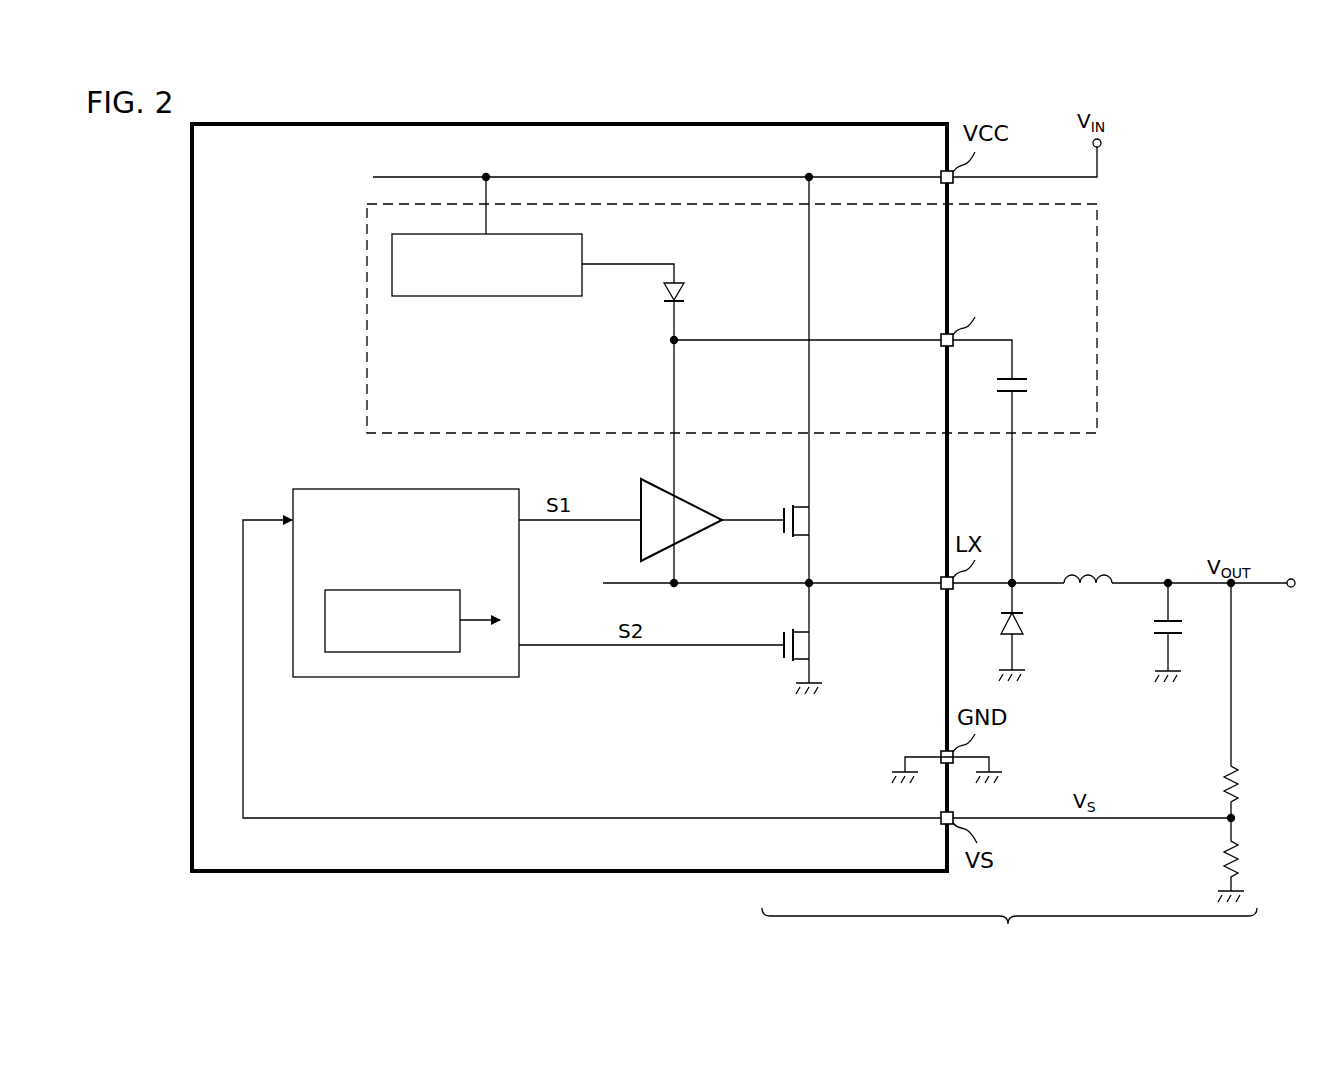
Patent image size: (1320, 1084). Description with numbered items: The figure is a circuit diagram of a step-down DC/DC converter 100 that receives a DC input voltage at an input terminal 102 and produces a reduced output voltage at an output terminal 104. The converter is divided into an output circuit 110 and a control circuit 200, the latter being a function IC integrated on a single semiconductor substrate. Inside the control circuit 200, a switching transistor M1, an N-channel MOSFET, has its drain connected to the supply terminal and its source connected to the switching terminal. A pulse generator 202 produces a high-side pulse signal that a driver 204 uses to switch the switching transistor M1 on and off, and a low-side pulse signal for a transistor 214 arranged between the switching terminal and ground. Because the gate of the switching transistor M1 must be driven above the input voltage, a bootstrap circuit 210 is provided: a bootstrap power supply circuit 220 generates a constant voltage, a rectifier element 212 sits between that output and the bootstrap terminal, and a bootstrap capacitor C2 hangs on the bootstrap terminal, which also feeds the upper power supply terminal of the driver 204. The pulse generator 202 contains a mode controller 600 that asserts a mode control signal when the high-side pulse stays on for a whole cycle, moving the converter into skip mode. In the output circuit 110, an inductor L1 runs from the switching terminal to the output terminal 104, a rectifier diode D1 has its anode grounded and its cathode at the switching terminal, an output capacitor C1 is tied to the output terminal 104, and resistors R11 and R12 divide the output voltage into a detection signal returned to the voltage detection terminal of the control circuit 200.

The DC/DC converter 100 is at (1313, 175).
The input terminal 102 is at (1101, 143).
The output terminal 104 is at (1291, 578).
The output circuit 110 is at (1009, 931).
The control circuit 200 is at (420, 872).
The pulse generator 202 is at (428, 489).
The driver 204 is at (690, 500).
The bootstrap circuit 210 is at (364, 311).
The rectifier element 212 is at (688, 292).
The transistor 214 is at (812, 645).
The bootstrap power supply circuit 220 is at (490, 297).
The mode controller 600 is at (393, 590).
The switching transistor M1 is at (812, 520).
The rectifier diode D1 is at (1026, 628).
The inductor L1 is at (1088, 572).
The output capacitor C1 is at (1148, 630).
The bootstrap capacitor C2 is at (1030, 385).
The resistor R11 is at (1242, 785).
The resistor R12 is at (1242, 860).